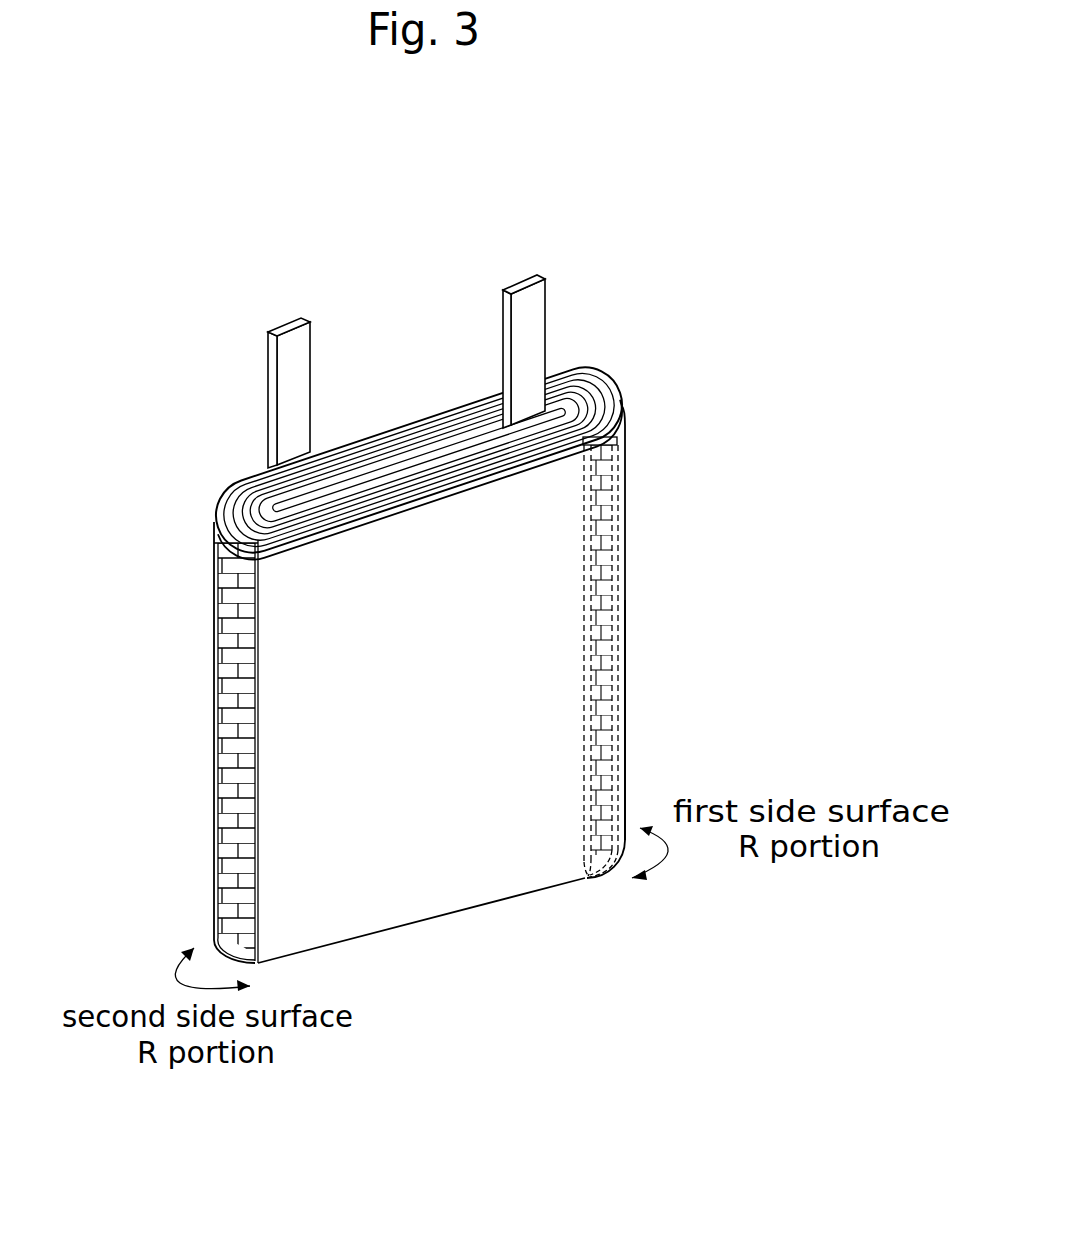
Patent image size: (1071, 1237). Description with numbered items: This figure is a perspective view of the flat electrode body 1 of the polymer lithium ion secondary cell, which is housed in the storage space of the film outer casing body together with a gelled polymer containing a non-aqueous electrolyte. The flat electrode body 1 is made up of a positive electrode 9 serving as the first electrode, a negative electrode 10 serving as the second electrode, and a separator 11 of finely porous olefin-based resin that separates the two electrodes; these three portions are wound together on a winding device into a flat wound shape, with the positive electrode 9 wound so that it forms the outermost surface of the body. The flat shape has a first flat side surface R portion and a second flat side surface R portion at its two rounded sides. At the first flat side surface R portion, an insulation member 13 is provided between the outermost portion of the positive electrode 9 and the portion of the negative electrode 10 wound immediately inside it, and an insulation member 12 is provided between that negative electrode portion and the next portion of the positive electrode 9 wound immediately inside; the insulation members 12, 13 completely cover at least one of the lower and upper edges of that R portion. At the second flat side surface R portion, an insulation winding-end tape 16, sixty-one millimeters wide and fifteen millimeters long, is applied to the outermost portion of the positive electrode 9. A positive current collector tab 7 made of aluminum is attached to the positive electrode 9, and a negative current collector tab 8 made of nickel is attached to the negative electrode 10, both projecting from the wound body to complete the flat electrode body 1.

The flat electrode body 1 is at (650, 406).
The positive current collector tab 7 is at (298, 393).
The negative current collector tab 8 is at (527, 348).
The positive electrode 9 is at (222, 510).
The negative electrode 10 is at (250, 495).
The separator 11 is at (570, 390).
The insulation member 12 is at (602, 592).
The insulation member 13 is at (620, 695).
The insulation winding-end tape 16 is at (233, 683).